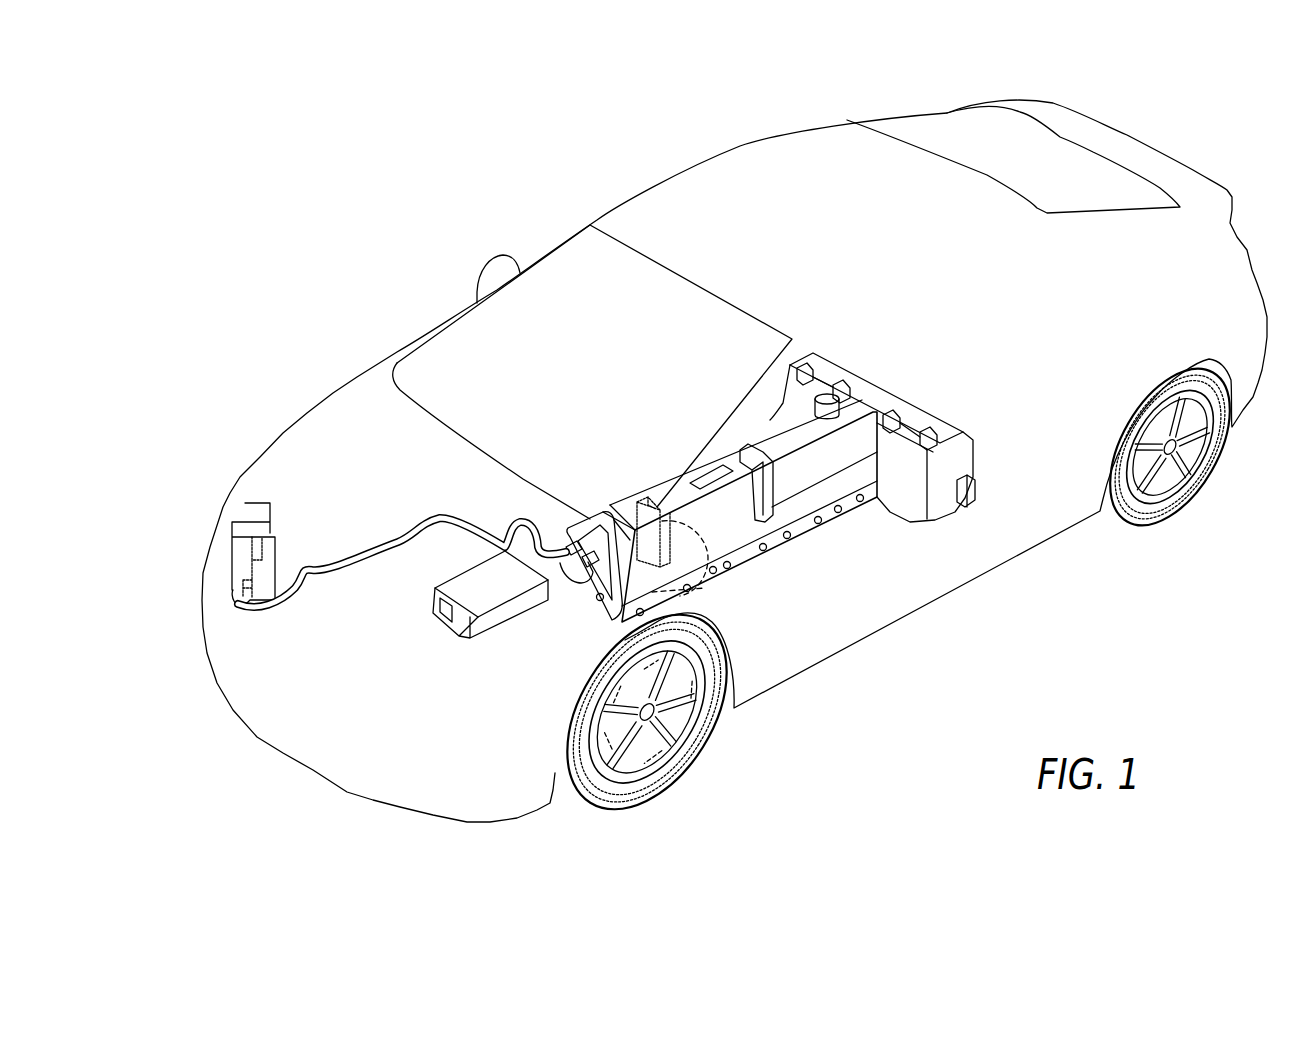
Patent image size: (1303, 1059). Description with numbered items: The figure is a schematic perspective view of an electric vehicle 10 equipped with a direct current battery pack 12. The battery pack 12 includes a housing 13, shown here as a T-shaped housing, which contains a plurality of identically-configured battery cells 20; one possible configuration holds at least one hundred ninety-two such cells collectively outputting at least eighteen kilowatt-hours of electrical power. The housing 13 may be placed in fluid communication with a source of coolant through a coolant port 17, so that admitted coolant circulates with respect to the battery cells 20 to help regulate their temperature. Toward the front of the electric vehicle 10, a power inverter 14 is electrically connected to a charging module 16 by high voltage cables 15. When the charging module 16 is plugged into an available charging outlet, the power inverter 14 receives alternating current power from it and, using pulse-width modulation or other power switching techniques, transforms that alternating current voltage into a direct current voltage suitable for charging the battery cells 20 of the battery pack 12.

The electric vehicle 10 is at (403, 148).
The battery pack 12 is at (670, 480).
The housing 13 is at (822, 497).
The power inverter 14 is at (465, 592).
The high voltage cables 15 is at (444, 518).
The charging module 16 is at (258, 527).
The coolant port 17 is at (597, 598).
The battery cells 20 is at (705, 588).